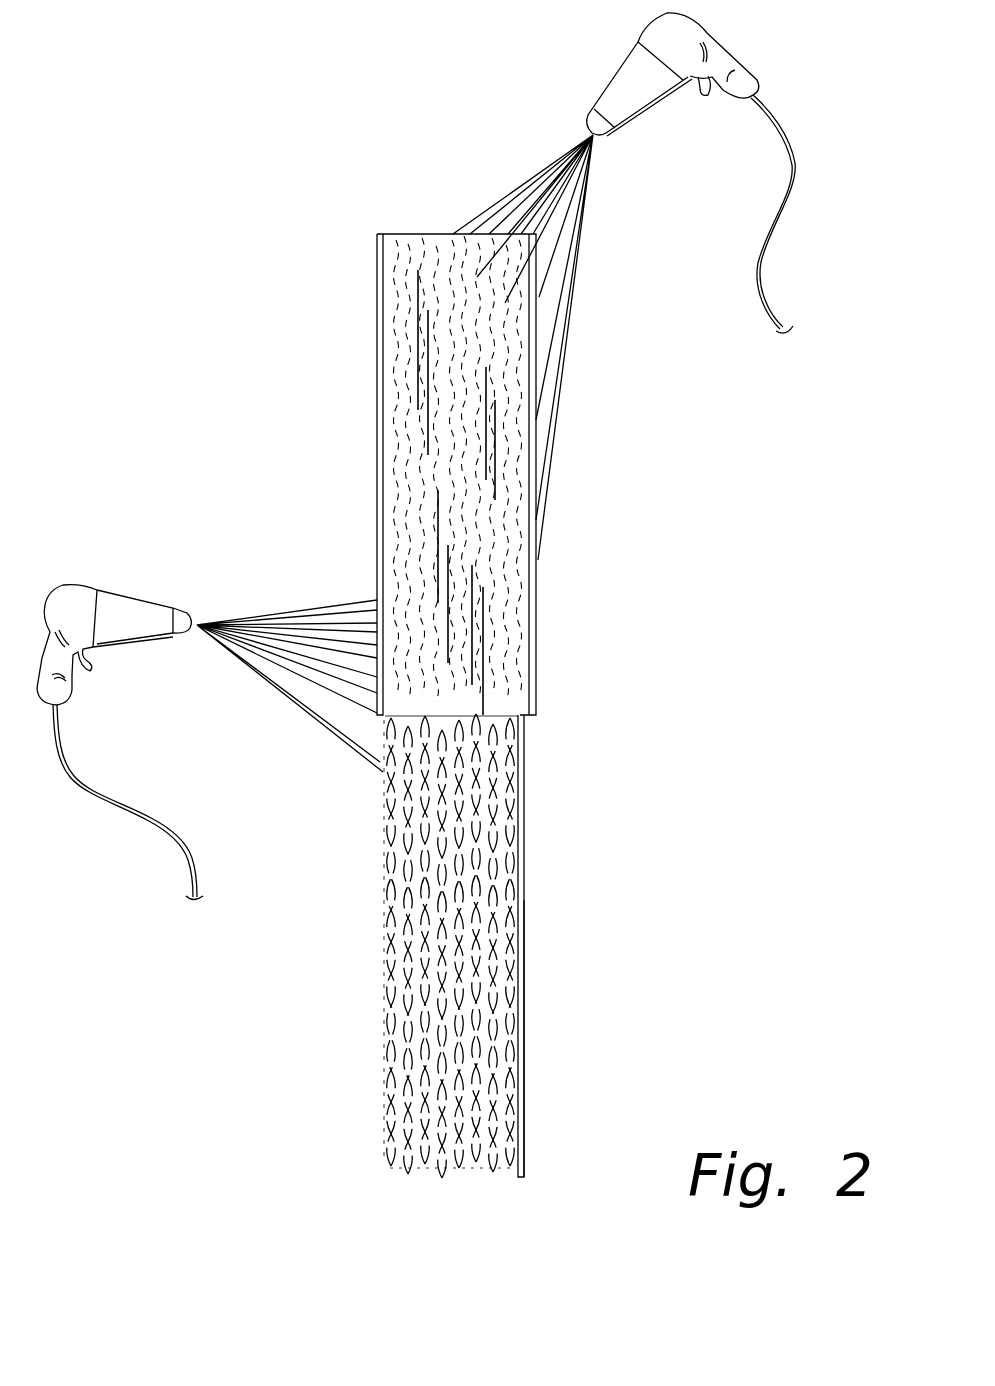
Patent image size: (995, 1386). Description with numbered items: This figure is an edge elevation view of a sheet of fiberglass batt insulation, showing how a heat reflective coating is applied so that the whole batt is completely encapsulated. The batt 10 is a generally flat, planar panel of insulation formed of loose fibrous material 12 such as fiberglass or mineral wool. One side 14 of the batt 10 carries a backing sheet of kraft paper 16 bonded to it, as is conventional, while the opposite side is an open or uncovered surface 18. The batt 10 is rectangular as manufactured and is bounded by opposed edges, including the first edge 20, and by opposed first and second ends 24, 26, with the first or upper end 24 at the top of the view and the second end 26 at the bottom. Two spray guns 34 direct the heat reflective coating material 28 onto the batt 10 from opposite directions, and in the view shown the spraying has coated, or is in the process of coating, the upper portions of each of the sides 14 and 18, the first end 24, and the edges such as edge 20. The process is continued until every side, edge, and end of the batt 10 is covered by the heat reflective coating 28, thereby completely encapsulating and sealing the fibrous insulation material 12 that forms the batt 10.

The insulation batt 10 is at (718, 846).
The loose fibrous material 12 is at (420, 1035).
The first side 14 is at (525, 860).
The backing sheet of kraft paper 16 is at (525, 1043).
The uncovered surface 18 is at (393, 853).
The first edge 20 is at (490, 735).
The first end 24 is at (437, 234).
The second end 26 is at (433, 1163).
The heat reflective coating material 28 is at (377, 350).
The spray guns 34 is at (615, 72).